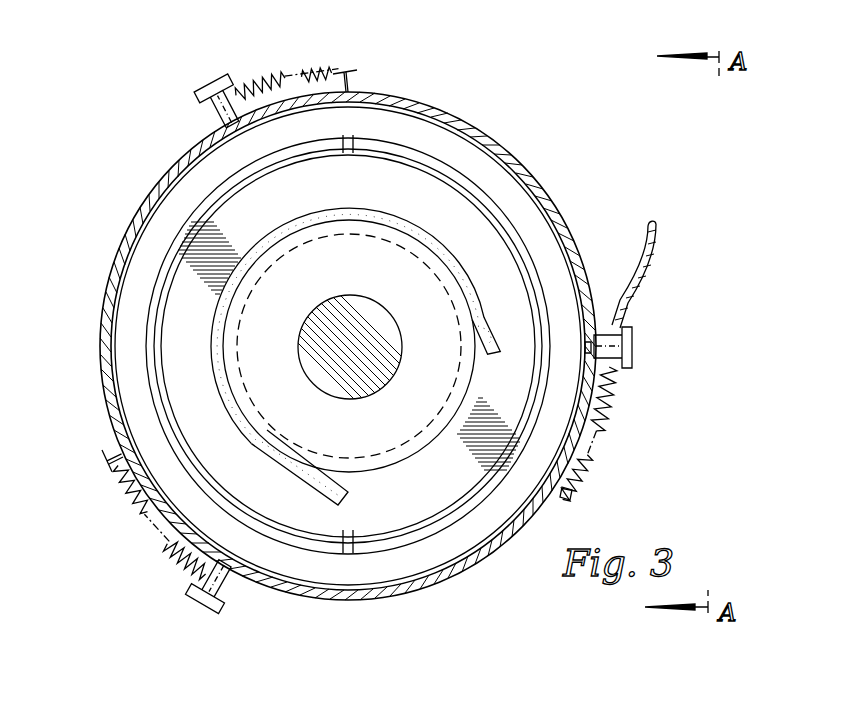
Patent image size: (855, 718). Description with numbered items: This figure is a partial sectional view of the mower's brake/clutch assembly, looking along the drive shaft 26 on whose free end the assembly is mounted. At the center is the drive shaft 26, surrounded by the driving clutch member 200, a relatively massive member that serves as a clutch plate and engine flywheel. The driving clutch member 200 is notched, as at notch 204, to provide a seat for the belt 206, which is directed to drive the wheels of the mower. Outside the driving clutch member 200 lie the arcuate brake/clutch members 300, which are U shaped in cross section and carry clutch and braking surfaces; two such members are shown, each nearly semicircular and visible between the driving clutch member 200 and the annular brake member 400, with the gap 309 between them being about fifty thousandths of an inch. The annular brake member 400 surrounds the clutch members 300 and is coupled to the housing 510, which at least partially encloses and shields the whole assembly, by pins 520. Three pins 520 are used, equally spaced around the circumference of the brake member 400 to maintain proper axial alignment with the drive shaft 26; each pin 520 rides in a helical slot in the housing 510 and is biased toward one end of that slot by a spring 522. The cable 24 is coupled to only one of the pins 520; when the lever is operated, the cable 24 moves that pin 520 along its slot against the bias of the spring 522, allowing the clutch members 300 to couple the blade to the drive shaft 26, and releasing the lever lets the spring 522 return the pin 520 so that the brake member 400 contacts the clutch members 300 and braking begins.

The cable 24 is at (648, 273).
The drive shaft 26 is at (350, 315).
The driving clutch member 200 is at (492, 312).
The notch 204 is at (262, 406).
The belt 206 is at (292, 228).
The arcuate brake/clutch member 300 is at (478, 190).
The gap 309 is at (352, 135).
The annular brake member 400 is at (520, 198).
The housing 510 is at (563, 217).
The pin 520 is at (209, 106).
The spring 522 is at (278, 78).